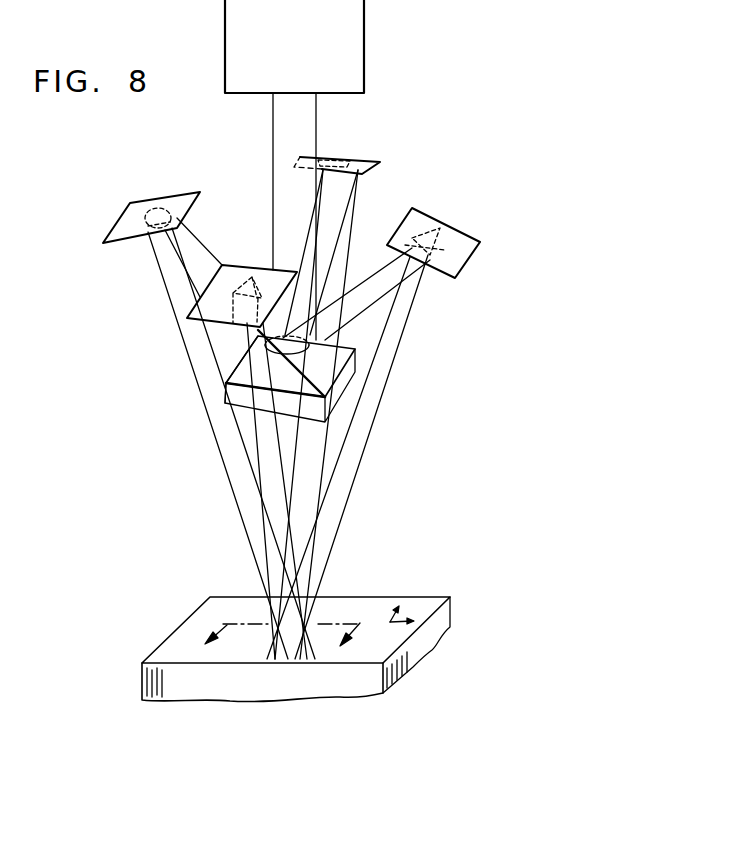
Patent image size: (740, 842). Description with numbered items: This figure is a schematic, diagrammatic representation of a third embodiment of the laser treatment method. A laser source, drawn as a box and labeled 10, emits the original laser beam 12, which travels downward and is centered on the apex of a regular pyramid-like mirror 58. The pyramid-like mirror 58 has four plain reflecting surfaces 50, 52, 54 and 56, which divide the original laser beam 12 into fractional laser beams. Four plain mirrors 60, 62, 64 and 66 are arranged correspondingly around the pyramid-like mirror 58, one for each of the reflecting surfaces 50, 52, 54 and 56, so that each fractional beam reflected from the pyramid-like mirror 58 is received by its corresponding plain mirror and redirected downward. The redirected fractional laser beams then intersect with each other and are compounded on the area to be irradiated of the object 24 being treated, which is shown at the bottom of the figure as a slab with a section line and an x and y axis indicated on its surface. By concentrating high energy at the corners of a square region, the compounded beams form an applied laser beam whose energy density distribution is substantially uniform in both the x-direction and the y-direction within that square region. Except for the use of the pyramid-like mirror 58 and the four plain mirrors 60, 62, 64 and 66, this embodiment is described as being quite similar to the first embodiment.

The laser 10 is at (364, 55).
The laser beam 12 is at (273, 127).
The object being treated 24 is at (207, 610).
The plain reflecting surface 50 is at (294, 379).
The plain reflecting surface 52 is at (300, 375).
The plain reflecting surface 54 is at (250, 352).
The plain reflecting surface 56 is at (327, 342).
The regular pyramid-like mirror 58 is at (230, 402).
The plain mirror 60 is at (465, 237).
The plain mirror 62 is at (242, 270).
The plain mirror 64 is at (127, 220).
The plain mirror 66 is at (370, 162).